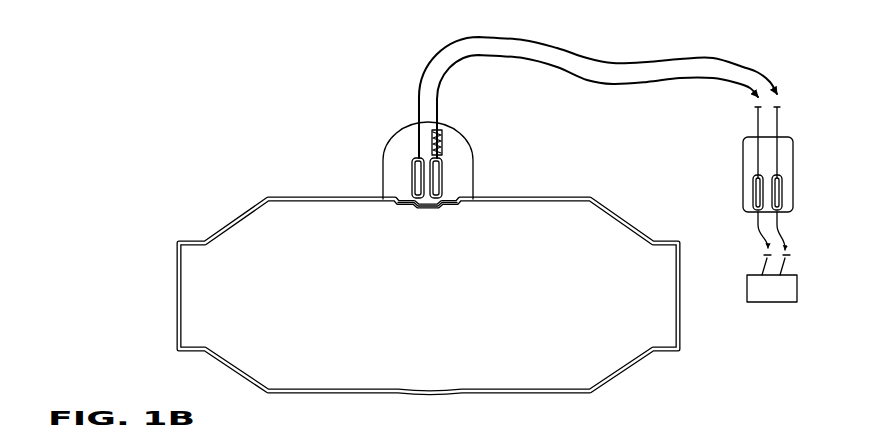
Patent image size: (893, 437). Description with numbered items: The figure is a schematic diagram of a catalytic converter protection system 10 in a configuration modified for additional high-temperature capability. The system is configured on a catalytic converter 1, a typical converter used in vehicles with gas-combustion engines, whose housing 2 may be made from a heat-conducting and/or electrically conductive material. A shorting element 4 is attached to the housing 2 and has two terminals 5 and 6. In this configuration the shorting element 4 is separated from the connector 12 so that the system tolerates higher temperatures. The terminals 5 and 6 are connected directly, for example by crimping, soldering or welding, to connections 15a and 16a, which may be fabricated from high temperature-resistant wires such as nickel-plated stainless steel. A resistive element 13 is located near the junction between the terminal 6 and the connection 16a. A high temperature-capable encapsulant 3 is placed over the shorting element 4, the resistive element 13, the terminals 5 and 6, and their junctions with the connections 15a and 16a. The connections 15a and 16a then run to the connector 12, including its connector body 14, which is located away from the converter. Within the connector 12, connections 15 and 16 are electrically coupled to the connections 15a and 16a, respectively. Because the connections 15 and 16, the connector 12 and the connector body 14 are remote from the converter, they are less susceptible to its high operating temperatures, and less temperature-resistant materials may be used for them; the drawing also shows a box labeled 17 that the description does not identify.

The catalytic converter protection system 10 is at (289, 130).
The catalytic converter 1 is at (223, 210).
The housing 2 is at (291, 198).
The encapsulant 3 is at (405, 120).
The shorting element 4 is at (414, 203).
The terminal 5 is at (413, 162).
The terminal 6 is at (442, 167).
The resistive element 13 is at (443, 140).
The connection 15a is at (433, 60).
The connection 16a is at (482, 59).
The connector 12 is at (740, 162).
The connector body 14 is at (753, 137).
The connection 15 is at (759, 230).
The connection 16 is at (783, 228).
The control unit 17 is at (772, 288).